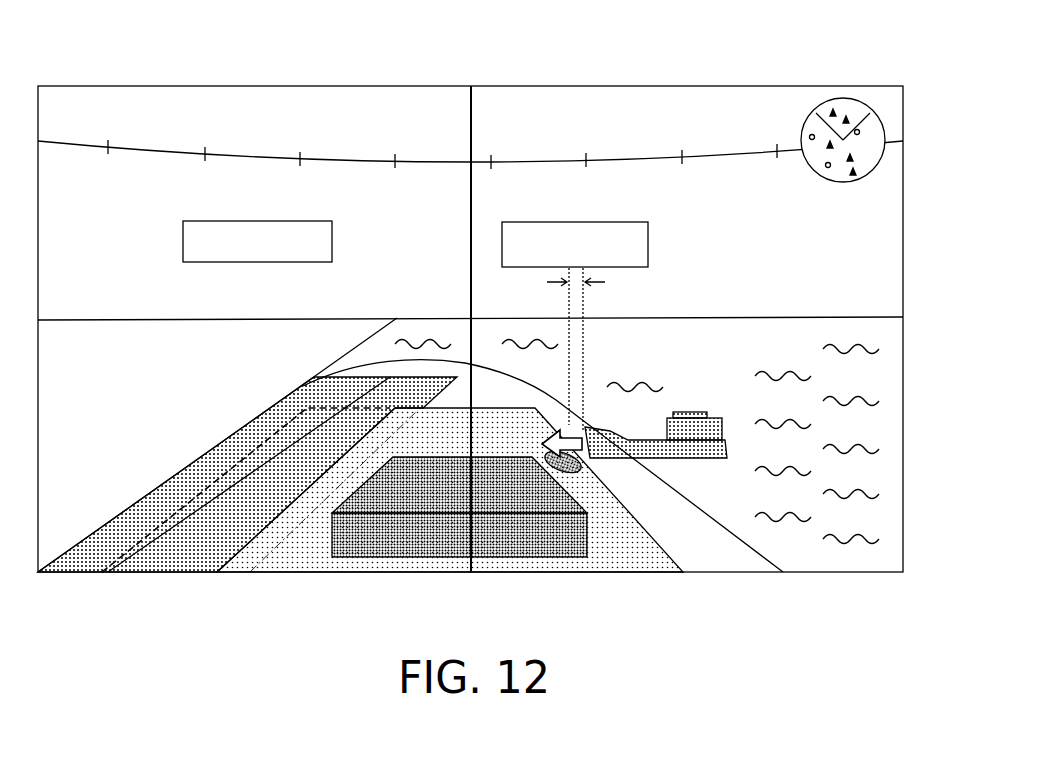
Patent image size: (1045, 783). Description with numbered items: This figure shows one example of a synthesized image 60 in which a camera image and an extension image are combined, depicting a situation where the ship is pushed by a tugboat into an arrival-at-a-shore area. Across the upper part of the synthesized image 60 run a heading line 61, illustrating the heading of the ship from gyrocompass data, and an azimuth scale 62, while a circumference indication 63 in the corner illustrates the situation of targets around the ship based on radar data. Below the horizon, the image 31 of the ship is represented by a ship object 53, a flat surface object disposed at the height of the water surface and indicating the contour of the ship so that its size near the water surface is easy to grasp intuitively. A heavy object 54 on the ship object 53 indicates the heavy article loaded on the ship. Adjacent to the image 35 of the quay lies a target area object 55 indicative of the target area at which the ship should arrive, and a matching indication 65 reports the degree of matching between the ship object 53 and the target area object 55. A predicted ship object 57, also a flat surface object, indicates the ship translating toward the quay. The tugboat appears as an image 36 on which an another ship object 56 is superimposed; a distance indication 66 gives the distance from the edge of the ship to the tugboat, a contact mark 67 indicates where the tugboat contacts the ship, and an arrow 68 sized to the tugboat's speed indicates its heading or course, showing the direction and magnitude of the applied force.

The synthesized image 60 is at (118, 86).
The heading line 61 is at (471, 112).
The azimuth scale 62 is at (632, 157).
The circumference indication 63 is at (851, 112).
The matching indication 65 is at (183, 240).
The distance indication 66 is at (648, 240).
The image of the quay 35 is at (148, 424).
The image of the tugboat 36 is at (680, 412).
The another ship object 56 is at (698, 412).
The target area object 55 is at (322, 392).
The predicted ship object 57 is at (128, 512).
The ship object 53 is at (625, 560).
The heavy object 54 is at (430, 535).
The contact mark 67 is at (578, 475).
The arrow 68 is at (545, 438).
The image of the ship 31 is at (724, 560).